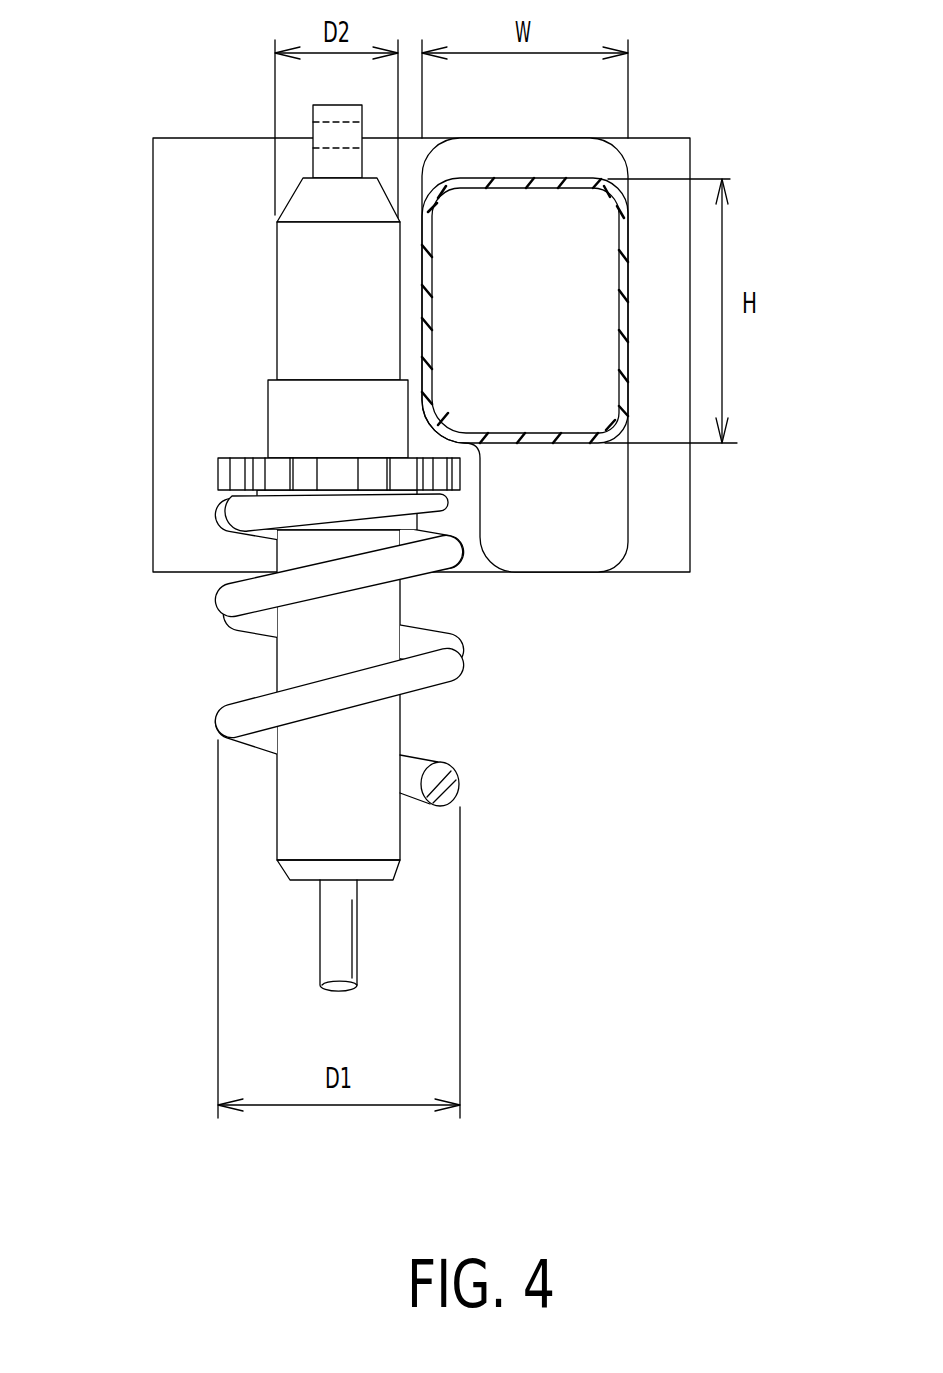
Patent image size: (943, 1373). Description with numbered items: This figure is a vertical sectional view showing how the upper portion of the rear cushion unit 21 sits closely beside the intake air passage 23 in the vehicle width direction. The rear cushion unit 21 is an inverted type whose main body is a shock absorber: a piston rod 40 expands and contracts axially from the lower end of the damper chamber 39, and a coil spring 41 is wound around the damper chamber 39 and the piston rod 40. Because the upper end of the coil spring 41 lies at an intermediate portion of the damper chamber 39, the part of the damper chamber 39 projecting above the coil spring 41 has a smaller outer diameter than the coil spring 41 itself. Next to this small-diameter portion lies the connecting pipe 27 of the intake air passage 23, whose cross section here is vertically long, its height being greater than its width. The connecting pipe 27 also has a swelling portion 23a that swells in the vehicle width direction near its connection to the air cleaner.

The rear cushion unit 21 is at (245, 548).
The intake air passage 23 is at (485, 325).
The connecting pipe 27 is at (485, 325).
The swelling portion 23a is at (700, 518).
The damper chamber 39 is at (290, 335).
The piston rod 40 is at (225, 887).
The coil spring 41 is at (217, 597).